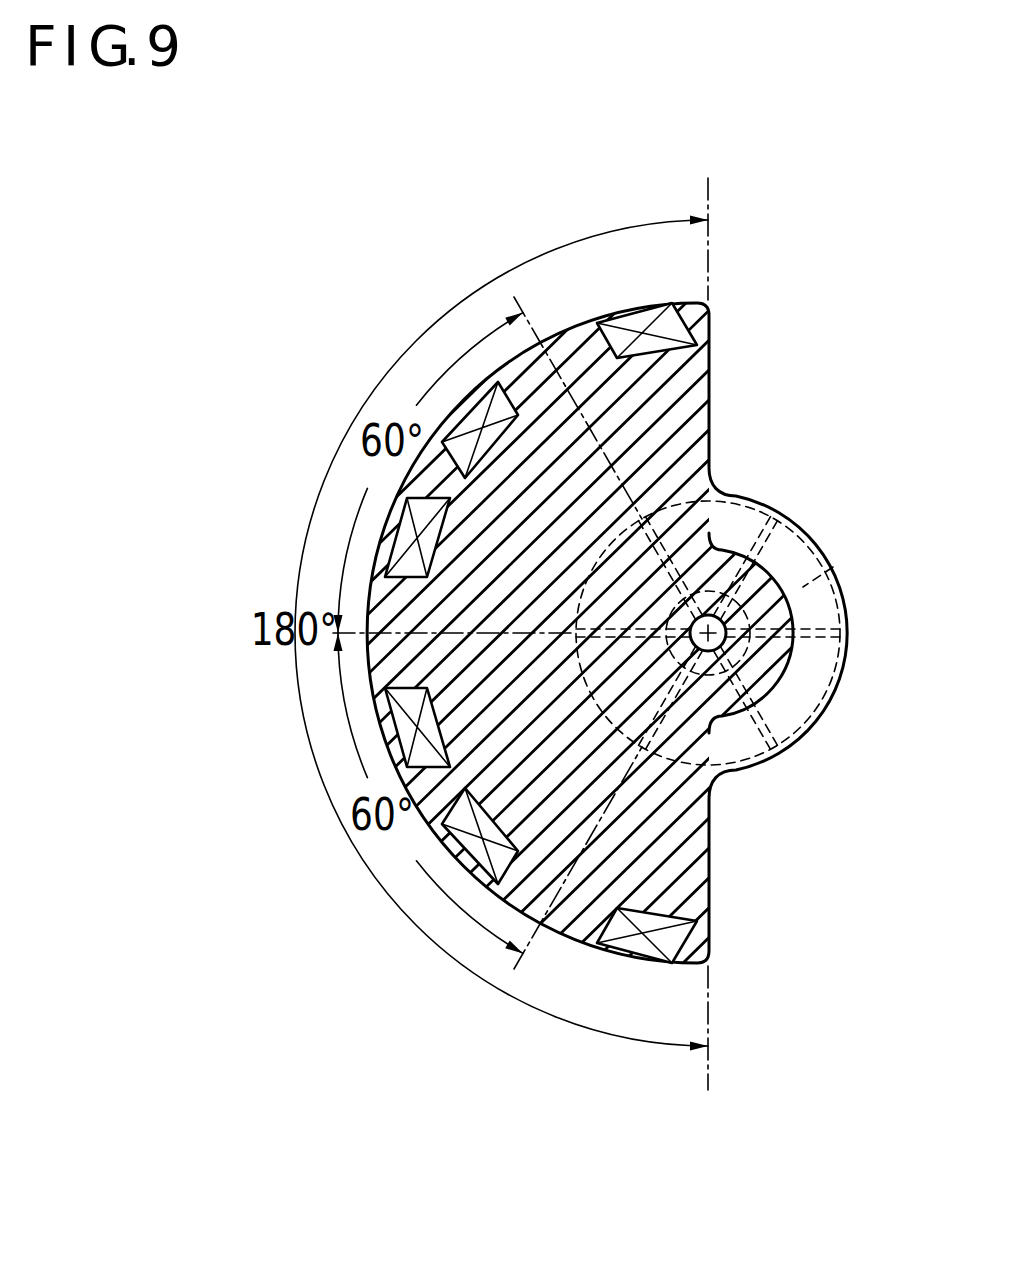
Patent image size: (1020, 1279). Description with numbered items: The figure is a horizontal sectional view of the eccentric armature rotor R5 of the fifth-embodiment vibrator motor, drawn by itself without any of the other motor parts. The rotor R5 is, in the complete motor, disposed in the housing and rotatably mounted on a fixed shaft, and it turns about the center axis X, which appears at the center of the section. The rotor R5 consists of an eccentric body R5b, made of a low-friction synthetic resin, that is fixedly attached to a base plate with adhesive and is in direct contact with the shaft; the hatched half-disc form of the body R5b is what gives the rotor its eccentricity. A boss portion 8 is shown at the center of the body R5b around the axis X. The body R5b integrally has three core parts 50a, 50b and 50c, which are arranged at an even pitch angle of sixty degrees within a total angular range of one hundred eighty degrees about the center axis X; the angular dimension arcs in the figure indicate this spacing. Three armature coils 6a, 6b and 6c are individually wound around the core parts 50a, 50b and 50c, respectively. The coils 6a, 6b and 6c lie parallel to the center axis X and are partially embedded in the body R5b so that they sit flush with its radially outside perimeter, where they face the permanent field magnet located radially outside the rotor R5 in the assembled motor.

The eccentric armature rotor R5 is at (510, 622).
The eccentric body R5b is at (745, 554).
The boss / bearing portion 8 is at (740, 631).
The center axis X is at (767, 671).
The armature coil 6a is at (542, 318).
The armature coil 6b is at (345, 664).
The armature coil 6c is at (524, 951).
The core part 50a is at (567, 351).
The core part 50b is at (392, 677).
The core part 50c is at (568, 914).